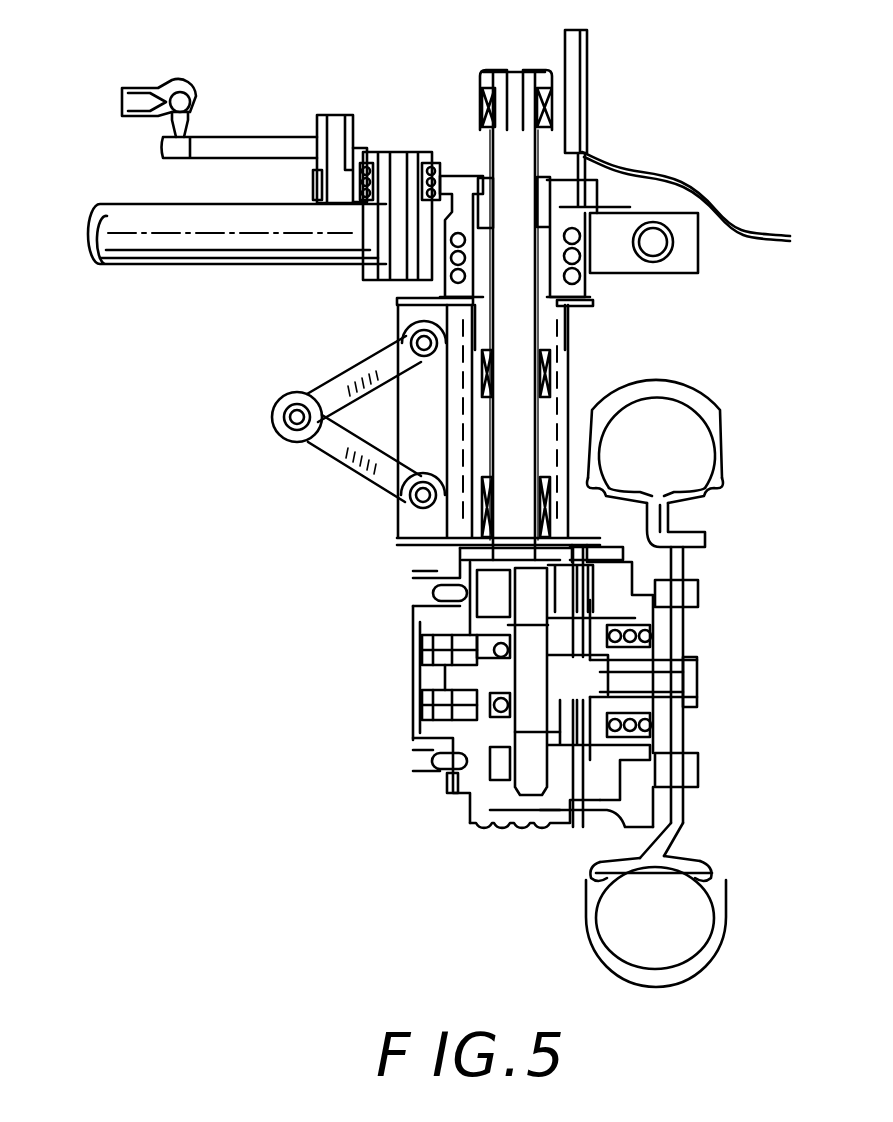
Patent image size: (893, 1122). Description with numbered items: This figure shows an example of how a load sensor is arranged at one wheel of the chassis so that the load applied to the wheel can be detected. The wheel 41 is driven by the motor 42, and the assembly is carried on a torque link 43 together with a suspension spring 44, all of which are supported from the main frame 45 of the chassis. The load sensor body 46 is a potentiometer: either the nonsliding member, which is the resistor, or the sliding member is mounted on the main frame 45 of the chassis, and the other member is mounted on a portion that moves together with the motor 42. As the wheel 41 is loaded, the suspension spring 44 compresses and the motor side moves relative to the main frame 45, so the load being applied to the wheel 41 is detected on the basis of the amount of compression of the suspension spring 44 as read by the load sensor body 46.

The wheel 41 is at (733, 433).
The motor 42 is at (392, 678).
The torque link 43 is at (322, 460).
The suspension spring 44 is at (575, 355).
The main frame of chassis 45 is at (710, 260).
The load sensor body 46 is at (588, 63).